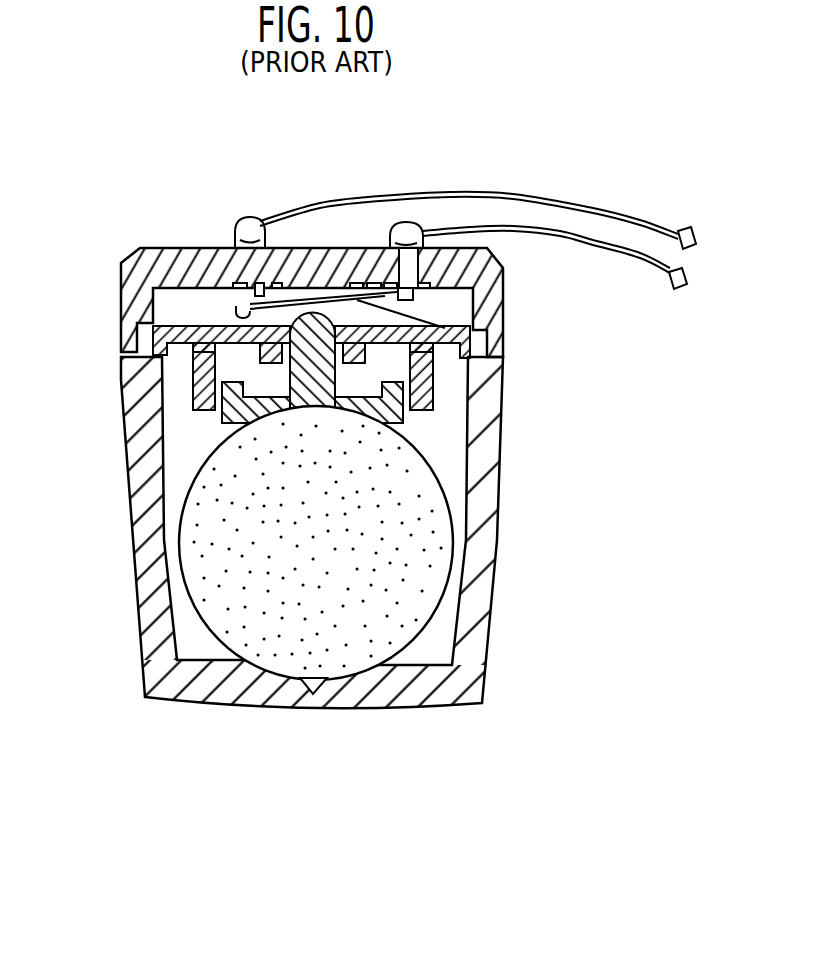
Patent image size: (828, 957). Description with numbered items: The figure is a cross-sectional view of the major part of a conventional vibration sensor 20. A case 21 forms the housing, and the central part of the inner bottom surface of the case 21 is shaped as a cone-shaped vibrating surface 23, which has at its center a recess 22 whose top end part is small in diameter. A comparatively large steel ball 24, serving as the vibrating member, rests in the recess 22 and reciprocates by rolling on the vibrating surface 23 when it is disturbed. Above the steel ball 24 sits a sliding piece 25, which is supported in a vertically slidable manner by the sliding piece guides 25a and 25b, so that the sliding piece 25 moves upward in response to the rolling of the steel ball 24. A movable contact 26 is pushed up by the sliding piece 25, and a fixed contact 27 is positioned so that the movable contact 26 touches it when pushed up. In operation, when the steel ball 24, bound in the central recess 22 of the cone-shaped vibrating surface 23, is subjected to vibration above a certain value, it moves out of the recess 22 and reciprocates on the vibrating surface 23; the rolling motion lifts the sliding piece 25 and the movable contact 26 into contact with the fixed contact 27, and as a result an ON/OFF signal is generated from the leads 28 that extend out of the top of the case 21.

The vibration sensor 20 is at (338, 919).
The case 21 is at (493, 582).
The recess 22 is at (318, 693).
The vibrating surface 23 is at (390, 670).
The steel ball 24 is at (453, 531).
The sliding piece 25 is at (357, 417).
The sliding piece guide 25a is at (430, 383).
The sliding piece guide 25b is at (368, 356).
The movable contact 26 is at (474, 347).
The fixed contact 27 is at (247, 331).
The leads 28 is at (611, 240).